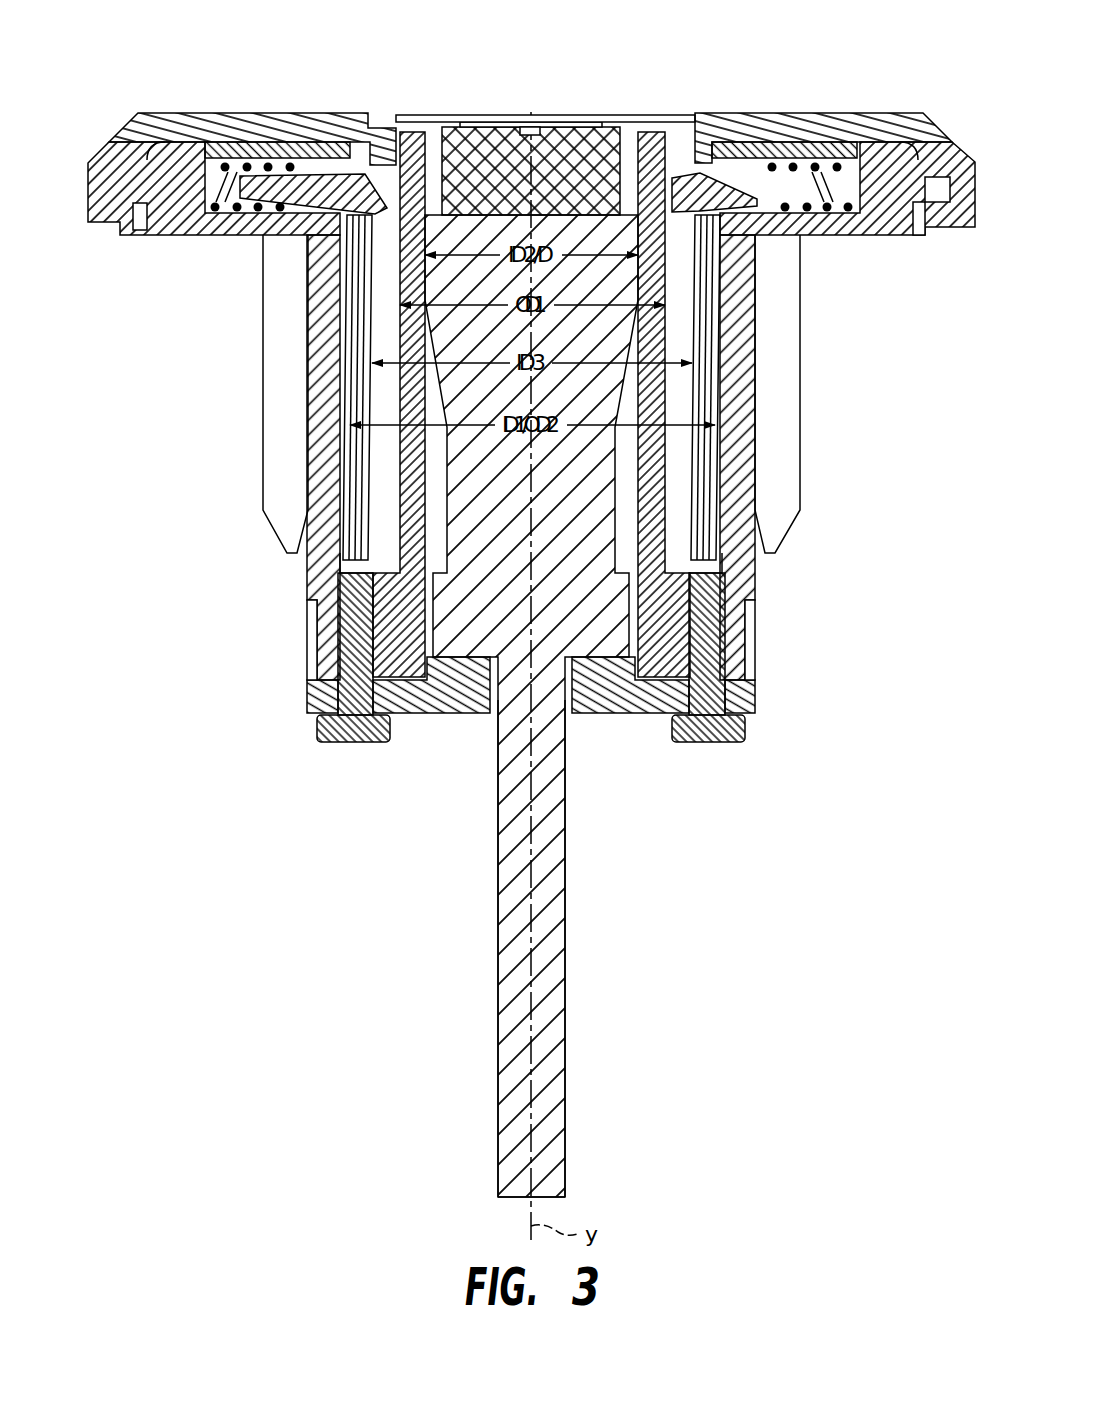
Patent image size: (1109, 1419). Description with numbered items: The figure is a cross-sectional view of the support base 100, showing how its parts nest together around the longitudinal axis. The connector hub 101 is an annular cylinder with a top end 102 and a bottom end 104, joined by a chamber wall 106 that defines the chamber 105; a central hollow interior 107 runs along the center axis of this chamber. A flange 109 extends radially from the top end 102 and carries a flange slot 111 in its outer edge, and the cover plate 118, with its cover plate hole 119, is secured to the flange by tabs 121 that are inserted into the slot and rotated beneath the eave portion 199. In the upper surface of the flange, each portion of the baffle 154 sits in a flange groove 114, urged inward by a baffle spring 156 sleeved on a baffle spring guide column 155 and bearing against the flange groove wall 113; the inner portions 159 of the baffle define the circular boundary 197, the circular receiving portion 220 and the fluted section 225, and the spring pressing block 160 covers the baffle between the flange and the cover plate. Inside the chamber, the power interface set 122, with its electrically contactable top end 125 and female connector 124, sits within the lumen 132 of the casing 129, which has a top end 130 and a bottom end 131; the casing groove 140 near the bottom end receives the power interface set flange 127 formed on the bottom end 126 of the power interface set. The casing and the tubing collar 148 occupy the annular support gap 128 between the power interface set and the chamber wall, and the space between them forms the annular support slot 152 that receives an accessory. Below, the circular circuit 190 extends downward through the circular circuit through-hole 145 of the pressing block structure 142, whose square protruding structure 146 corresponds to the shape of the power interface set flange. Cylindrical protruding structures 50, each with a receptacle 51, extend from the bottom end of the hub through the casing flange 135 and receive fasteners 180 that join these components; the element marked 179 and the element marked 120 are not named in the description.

The support base 100 is at (248, 45).
The connector hub 101 is at (760, 355).
The top end 102 is at (737, 245).
The bottom end 104 is at (748, 592).
The chamber 105 is at (396, 126).
The chamber wall 106 is at (357, 318).
The central hollow interior 107 is at (487, 110).
The flange 109 is at (178, 215).
The flange slot 111 is at (124, 236).
The flange groove wall 113 is at (218, 145).
The flange groove 114 is at (847, 230).
The cover plate 118 is at (152, 113).
The cover plate hole 119 is at (676, 140).
The outer lip 120 is at (95, 195).
The tab 121 is at (940, 212).
The power interface set 122 is at (475, 532).
The female connector 124 is at (538, 125).
The electrically contactable top end 125 is at (470, 128).
The bottom end 126 is at (448, 690).
The power interface set flange 127 is at (437, 643).
The annular support gap 128 is at (362, 232).
The casing 129 is at (422, 492).
The top end 130 is at (647, 132).
The bottom end 131 is at (655, 685).
The lumen 132 is at (432, 445).
The casing flange 135 is at (312, 628).
The casing groove 140 is at (636, 598).
The pressing block structure 142 is at (598, 690).
The circular circuit through-hole 145 is at (572, 705).
The square protruding structure 146 is at (468, 705).
The tubing collar 148 is at (707, 385).
The annular support slot 152 is at (348, 368).
The baffle 154 is at (778, 210).
The baffle spring guide column 155 is at (778, 178).
The baffle spring 156 is at (805, 165).
The inner portion 159 is at (722, 160).
The spring pressing block 160 is at (328, 130).
The finger 179 is at (782, 470).
The fastener 180 is at (705, 738).
The circular circuit 190 is at (553, 975).
The circular boundary 197 is at (432, 132).
The eave portion 199 is at (888, 163).
The circular receiving portion 220 is at (308, 140).
The fluted section 225 is at (378, 128).
The cylindrical protruding structure 50 is at (735, 655).
The receptacle 51 is at (718, 572).